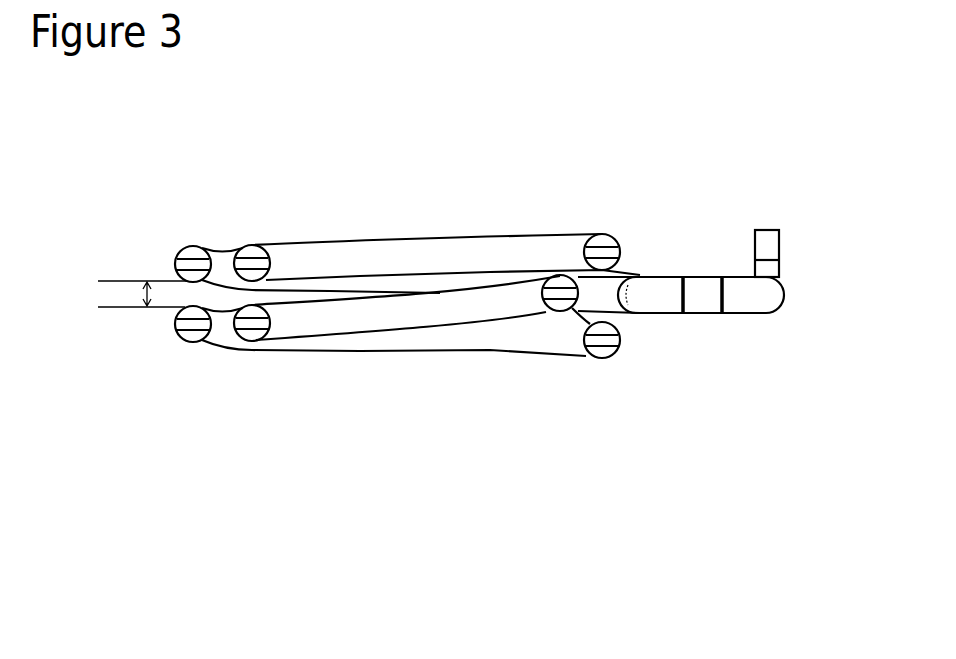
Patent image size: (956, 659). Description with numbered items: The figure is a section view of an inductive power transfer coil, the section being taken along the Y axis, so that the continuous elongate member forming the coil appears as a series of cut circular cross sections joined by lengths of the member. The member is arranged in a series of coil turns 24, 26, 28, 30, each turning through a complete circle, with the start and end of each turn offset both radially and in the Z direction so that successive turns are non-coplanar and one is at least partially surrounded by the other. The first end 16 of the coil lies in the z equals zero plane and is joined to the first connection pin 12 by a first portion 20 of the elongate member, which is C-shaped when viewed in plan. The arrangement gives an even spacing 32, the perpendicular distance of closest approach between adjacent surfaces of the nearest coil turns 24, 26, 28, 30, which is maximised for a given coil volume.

The first connection pin 12 is at (779, 250).
The first end 16 is at (639, 311).
The first portion 20 is at (785, 304).
The coil turn 24 is at (177, 259).
The coil turn 26 is at (363, 242).
The coil turn 28 is at (398, 320).
The coil turn 30 is at (450, 353).
The spacing 32 is at (127, 297).